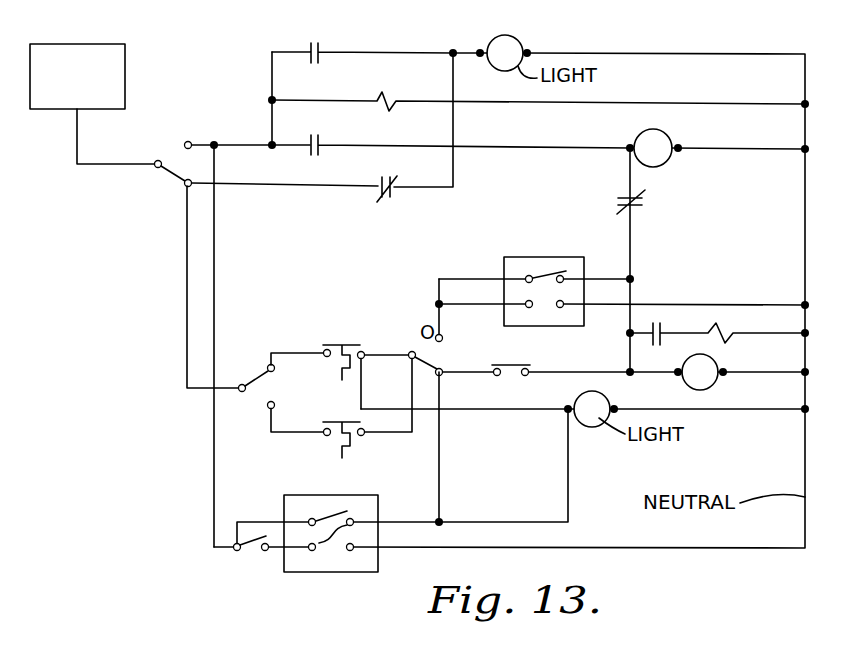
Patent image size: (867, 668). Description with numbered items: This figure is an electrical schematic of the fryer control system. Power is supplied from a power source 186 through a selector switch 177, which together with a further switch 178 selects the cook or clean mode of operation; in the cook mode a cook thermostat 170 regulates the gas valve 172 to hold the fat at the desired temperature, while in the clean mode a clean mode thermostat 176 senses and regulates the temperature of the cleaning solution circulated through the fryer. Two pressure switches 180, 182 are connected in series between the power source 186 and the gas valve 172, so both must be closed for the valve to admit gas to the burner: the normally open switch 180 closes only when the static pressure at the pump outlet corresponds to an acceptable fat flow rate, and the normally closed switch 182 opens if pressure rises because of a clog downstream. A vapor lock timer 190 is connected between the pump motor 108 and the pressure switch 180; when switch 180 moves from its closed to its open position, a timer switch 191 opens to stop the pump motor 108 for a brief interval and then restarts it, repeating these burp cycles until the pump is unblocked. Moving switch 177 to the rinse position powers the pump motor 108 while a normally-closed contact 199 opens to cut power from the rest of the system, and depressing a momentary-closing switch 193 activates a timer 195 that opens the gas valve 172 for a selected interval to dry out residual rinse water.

The power source 186 is at (127, 68).
The switch 177 is at (172, 166).
The pump motor 108 is at (648, 131).
The normally-closed contact 199 is at (624, 196).
The vapor lock timer 190 is at (521, 257).
The timer switch 191 is at (541, 273).
The cook thermostat 170 is at (346, 343).
The pressure switch 180 is at (426, 352).
The pressure switch 182 is at (517, 364).
The switch 178 is at (256, 391).
The clean mode thermostat 176 is at (346, 420).
The gas valve 172 is at (714, 385).
The momentary-closing switch 193 is at (262, 537).
The timer 195 is at (347, 495).